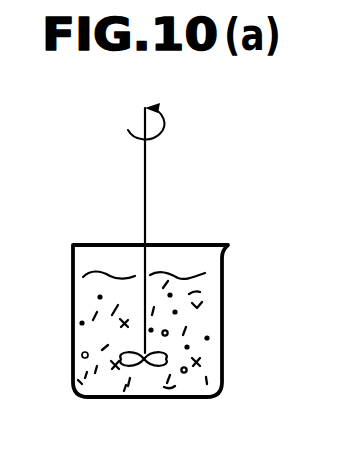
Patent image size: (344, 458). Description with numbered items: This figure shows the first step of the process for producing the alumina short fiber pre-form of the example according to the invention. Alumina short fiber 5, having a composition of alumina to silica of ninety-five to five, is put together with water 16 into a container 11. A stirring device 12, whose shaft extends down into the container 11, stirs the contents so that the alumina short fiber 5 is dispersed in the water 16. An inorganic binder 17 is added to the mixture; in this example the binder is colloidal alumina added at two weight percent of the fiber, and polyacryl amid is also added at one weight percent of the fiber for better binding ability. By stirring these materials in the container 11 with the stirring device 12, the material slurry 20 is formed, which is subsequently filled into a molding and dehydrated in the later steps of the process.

The alumina short fiber 5 is at (204, 356).
The container 11 is at (222, 292).
The stirring device 12 is at (145, 172).
The water 16 is at (132, 383).
The inorganic binder 17 is at (82, 353).
The slurry 20 is at (89, 292).